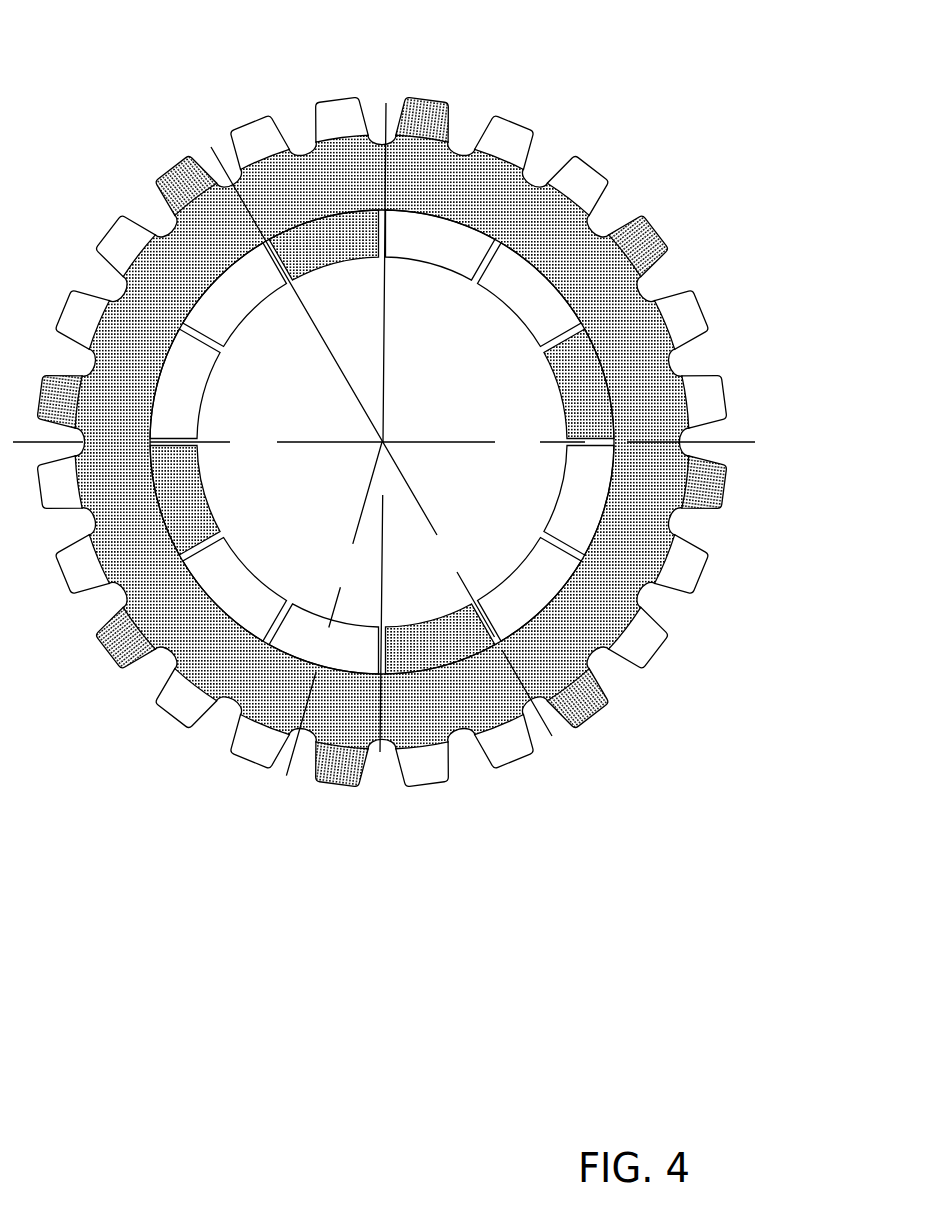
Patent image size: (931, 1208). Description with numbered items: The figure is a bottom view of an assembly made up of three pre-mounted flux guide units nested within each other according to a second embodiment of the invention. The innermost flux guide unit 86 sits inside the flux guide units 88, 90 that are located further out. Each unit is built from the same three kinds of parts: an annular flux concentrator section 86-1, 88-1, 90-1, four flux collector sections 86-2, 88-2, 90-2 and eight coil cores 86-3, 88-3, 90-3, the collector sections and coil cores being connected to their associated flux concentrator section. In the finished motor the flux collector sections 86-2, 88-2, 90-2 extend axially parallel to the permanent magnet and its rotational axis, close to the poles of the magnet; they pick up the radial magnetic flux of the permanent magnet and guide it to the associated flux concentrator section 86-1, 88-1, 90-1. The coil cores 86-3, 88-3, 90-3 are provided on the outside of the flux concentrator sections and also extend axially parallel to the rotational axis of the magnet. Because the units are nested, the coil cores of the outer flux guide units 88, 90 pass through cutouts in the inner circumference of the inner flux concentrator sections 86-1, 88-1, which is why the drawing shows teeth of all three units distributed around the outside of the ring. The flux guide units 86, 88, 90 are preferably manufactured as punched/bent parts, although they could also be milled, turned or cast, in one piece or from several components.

The innermost flux guide unit 86 is at (745, 482).
The flux guide unit 88 is at (727, 570).
The flux guide unit 90 is at (671, 652).
The annular flux concentrator section 86-1 is at (640, 384).
The annular flux concentrator section 88-1 is at (613, 238).
The annular flux concentrator section 90-1 is at (455, 230).
The flux collector section 86-2 is at (197, 504).
The flux collector section 88-2 is at (240, 314).
The flux collector section 90-2 is at (197, 395).
The coil core 86-3 is at (428, 113).
The coil core 88-3 is at (253, 137).
The coil core 90-3 is at (338, 113).